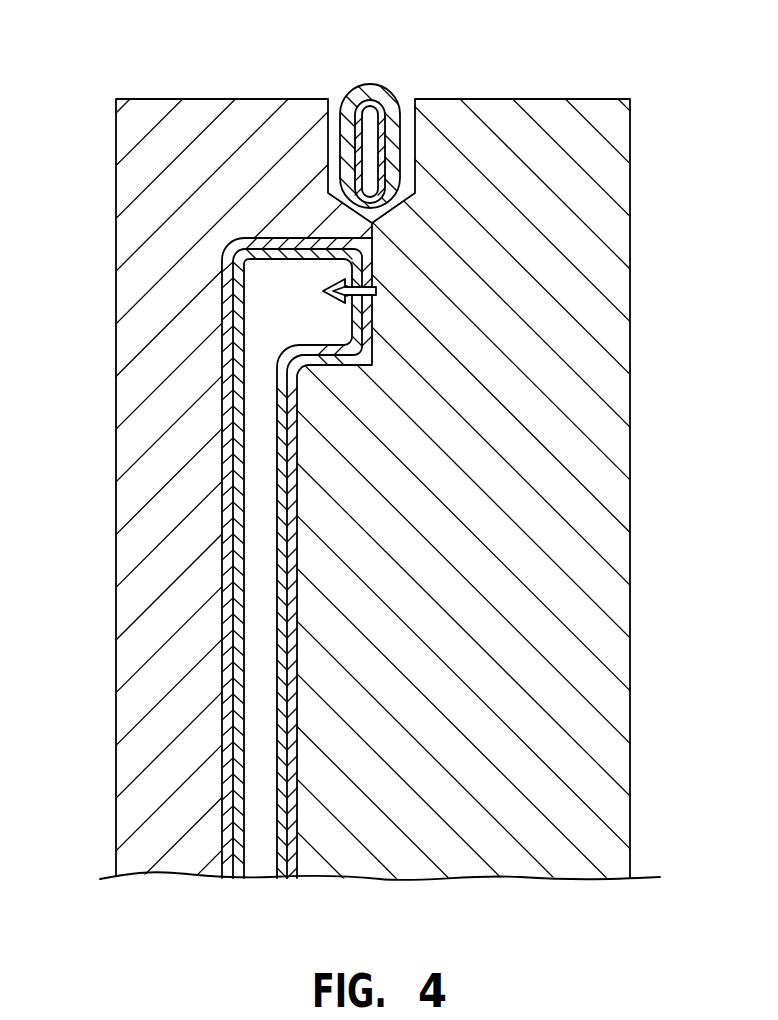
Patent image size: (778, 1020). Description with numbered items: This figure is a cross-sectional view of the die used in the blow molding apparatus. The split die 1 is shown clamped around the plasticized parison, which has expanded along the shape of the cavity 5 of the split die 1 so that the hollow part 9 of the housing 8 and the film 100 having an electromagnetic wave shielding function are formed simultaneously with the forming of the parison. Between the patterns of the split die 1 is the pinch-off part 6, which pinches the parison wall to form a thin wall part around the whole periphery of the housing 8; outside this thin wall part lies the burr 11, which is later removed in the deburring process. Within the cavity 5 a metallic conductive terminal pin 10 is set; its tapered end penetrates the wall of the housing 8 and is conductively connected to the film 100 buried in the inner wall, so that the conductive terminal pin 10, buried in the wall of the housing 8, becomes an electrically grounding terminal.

The split die 1 is at (142, 487).
The cavity 5 is at (222, 318).
The pinch-off part 6 is at (372, 237).
The housing 8 is at (230, 684).
The hollow part 9 is at (258, 553).
The conductive terminal pin 10 is at (376, 289).
The burr 11 is at (388, 105).
The film 100 is at (358, 110).